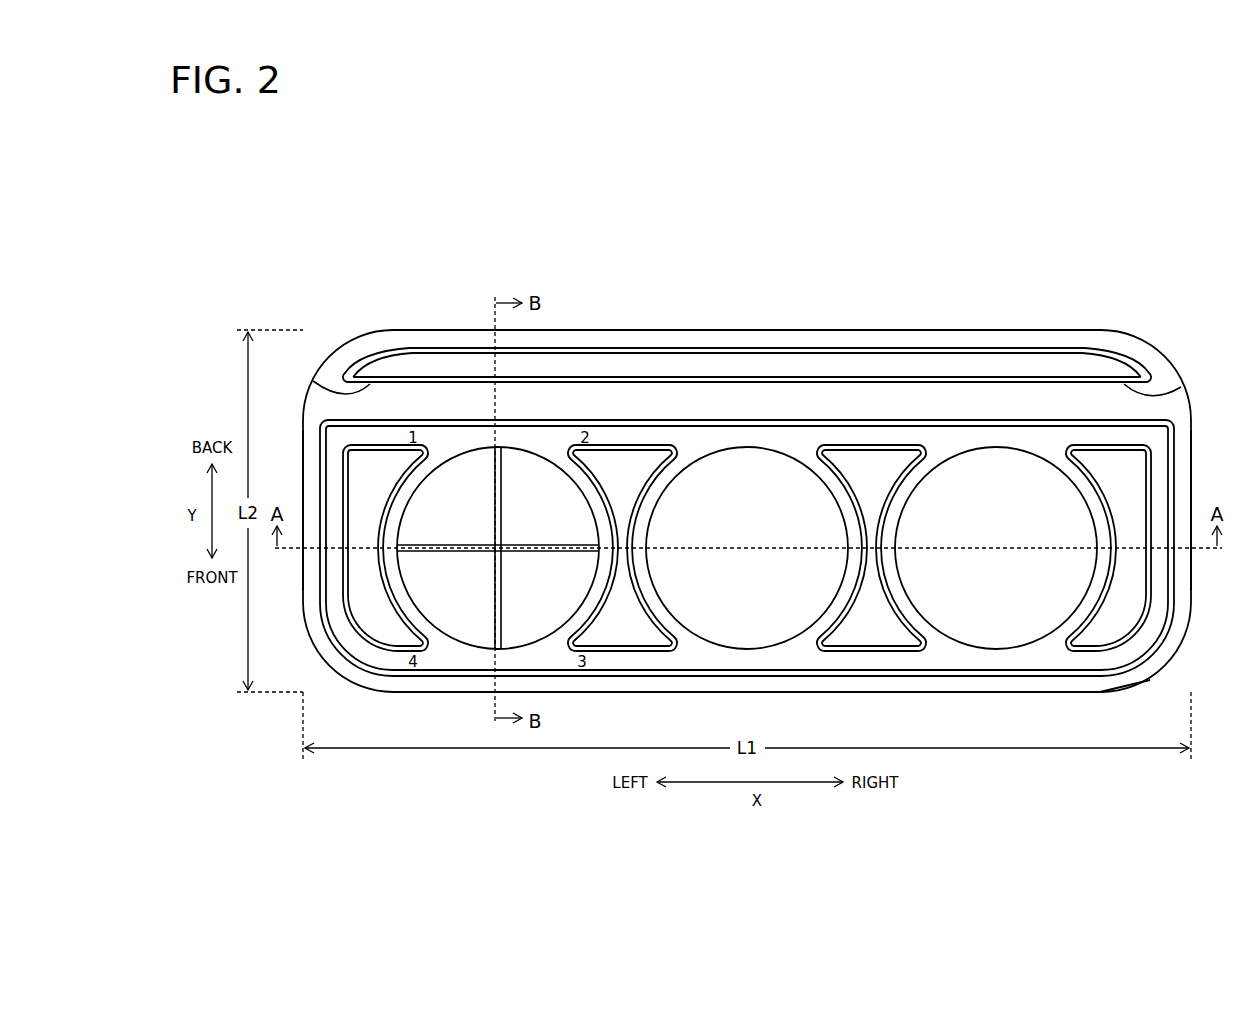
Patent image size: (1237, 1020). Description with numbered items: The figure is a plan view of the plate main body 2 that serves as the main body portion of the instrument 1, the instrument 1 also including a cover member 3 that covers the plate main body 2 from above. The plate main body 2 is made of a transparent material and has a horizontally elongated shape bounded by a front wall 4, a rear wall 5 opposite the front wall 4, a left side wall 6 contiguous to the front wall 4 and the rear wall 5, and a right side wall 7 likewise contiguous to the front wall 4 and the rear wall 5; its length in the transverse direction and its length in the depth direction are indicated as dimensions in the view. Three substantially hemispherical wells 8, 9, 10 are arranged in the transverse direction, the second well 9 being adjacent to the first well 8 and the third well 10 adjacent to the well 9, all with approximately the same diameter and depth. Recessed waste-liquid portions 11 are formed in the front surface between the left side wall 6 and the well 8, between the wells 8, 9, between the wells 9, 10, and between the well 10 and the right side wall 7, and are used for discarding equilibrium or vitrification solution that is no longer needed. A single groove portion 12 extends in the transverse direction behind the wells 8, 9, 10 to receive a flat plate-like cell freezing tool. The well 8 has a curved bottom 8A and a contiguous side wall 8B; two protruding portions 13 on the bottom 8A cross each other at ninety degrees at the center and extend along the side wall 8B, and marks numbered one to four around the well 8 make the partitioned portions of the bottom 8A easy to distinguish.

The instrument 1 is at (744, 468).
The plate main body 2 is at (1166, 638).
The cover member 3 is at (1086, 330).
The front wall 4 is at (776, 693).
The rear wall 5 is at (843, 348).
The left side wall 6 is at (303, 450).
The right side wall 7 is at (1192, 461).
The well 8 is at (504, 512).
The bottom 8A is at (476, 520).
The side wall 8B is at (450, 466).
The well 9 is at (745, 470).
The well 10 is at (997, 470).
The waste-liquid portion 11 is at (383, 620).
The groove portion 12 is at (350, 397).
The protruding portion 13 is at (502, 513).